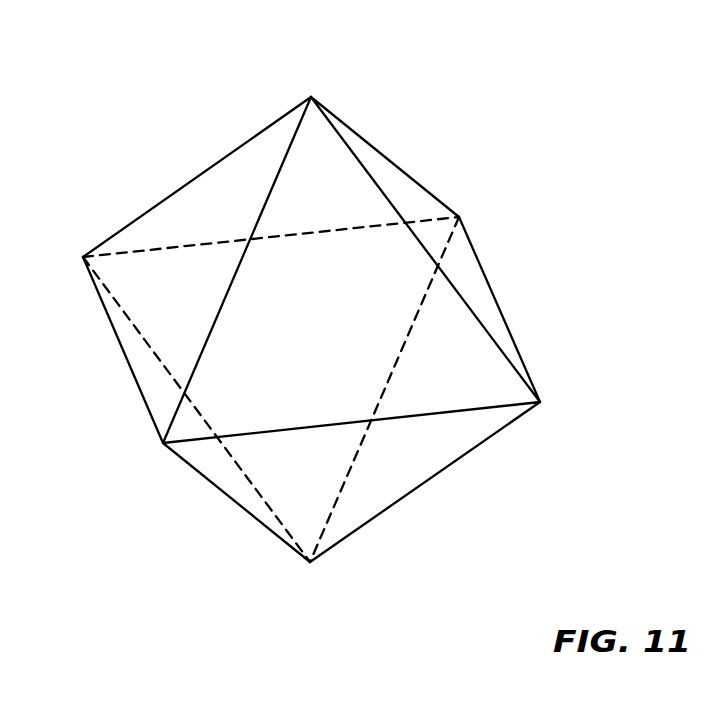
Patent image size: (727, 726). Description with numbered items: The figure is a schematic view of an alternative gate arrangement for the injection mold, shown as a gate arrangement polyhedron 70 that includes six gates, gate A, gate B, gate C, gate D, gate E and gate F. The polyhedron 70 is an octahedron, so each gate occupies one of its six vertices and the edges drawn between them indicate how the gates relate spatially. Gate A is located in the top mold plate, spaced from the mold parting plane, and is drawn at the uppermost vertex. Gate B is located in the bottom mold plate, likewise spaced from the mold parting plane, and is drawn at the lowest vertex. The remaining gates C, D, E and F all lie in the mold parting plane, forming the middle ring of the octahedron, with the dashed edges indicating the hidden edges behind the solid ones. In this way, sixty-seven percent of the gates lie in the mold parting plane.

The gate arrangement polyhedron 70 is at (506, 84).
The gate A is at (311, 96).
The gate B is at (310, 562).
The gate C is at (459, 217).
The gate D is at (540, 402).
The gate E is at (163, 443).
The gate F is at (83, 257).